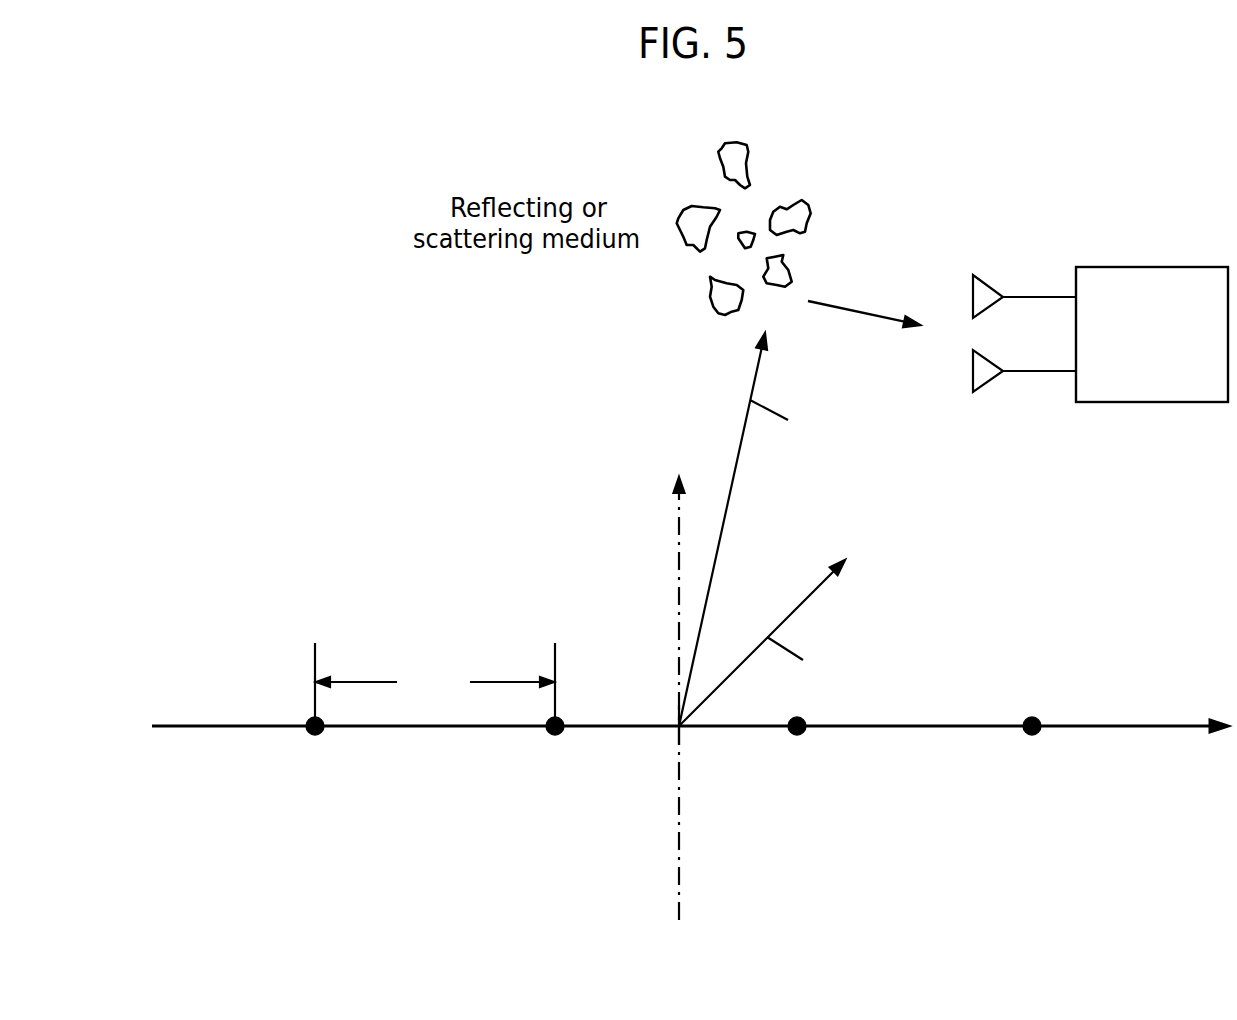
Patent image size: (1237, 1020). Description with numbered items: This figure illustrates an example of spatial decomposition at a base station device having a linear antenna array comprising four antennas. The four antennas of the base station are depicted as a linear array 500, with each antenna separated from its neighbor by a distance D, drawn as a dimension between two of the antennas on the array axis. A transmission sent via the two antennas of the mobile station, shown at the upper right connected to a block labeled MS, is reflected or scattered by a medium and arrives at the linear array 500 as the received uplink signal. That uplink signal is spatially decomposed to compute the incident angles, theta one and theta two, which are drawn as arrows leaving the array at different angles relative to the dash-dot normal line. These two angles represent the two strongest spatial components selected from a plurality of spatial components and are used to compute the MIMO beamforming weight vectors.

The linear array 500 is at (408, 607).